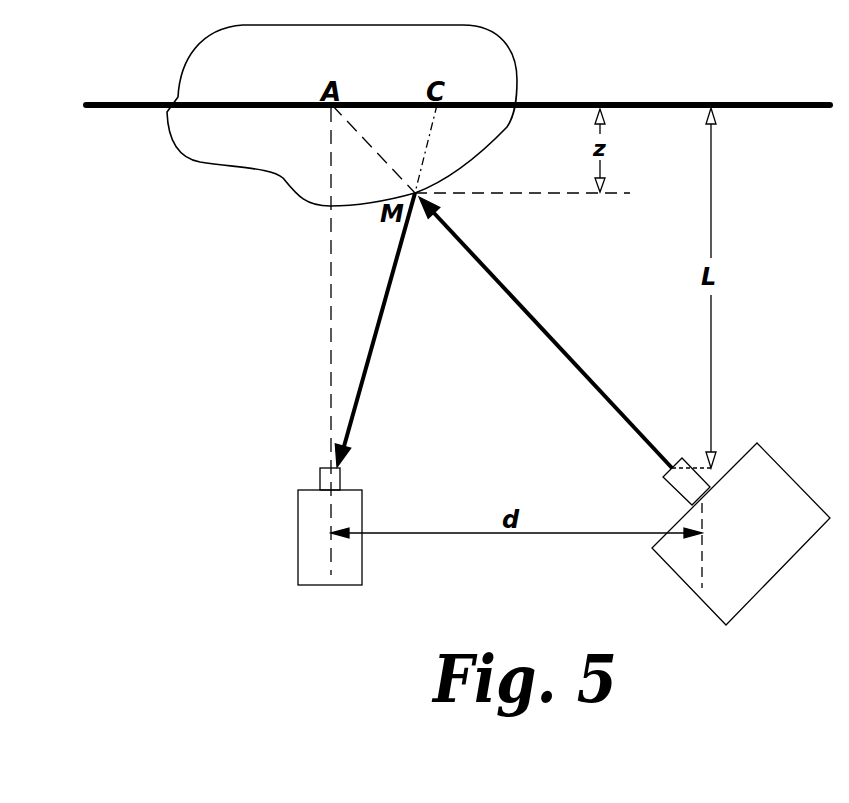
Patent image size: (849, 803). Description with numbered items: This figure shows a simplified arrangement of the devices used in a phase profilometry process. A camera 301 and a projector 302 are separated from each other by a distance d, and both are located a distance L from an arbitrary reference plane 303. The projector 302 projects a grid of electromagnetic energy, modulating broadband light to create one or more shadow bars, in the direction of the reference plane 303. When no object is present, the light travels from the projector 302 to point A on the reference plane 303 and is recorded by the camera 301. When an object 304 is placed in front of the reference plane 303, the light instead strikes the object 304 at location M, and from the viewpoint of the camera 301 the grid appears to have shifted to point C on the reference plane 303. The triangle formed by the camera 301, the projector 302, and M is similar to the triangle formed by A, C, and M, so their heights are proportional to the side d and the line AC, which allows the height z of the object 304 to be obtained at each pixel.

The camera 301 is at (298, 507).
The projector 302 is at (778, 460).
The reference plane 303 is at (658, 100).
The object 304 is at (292, 187).